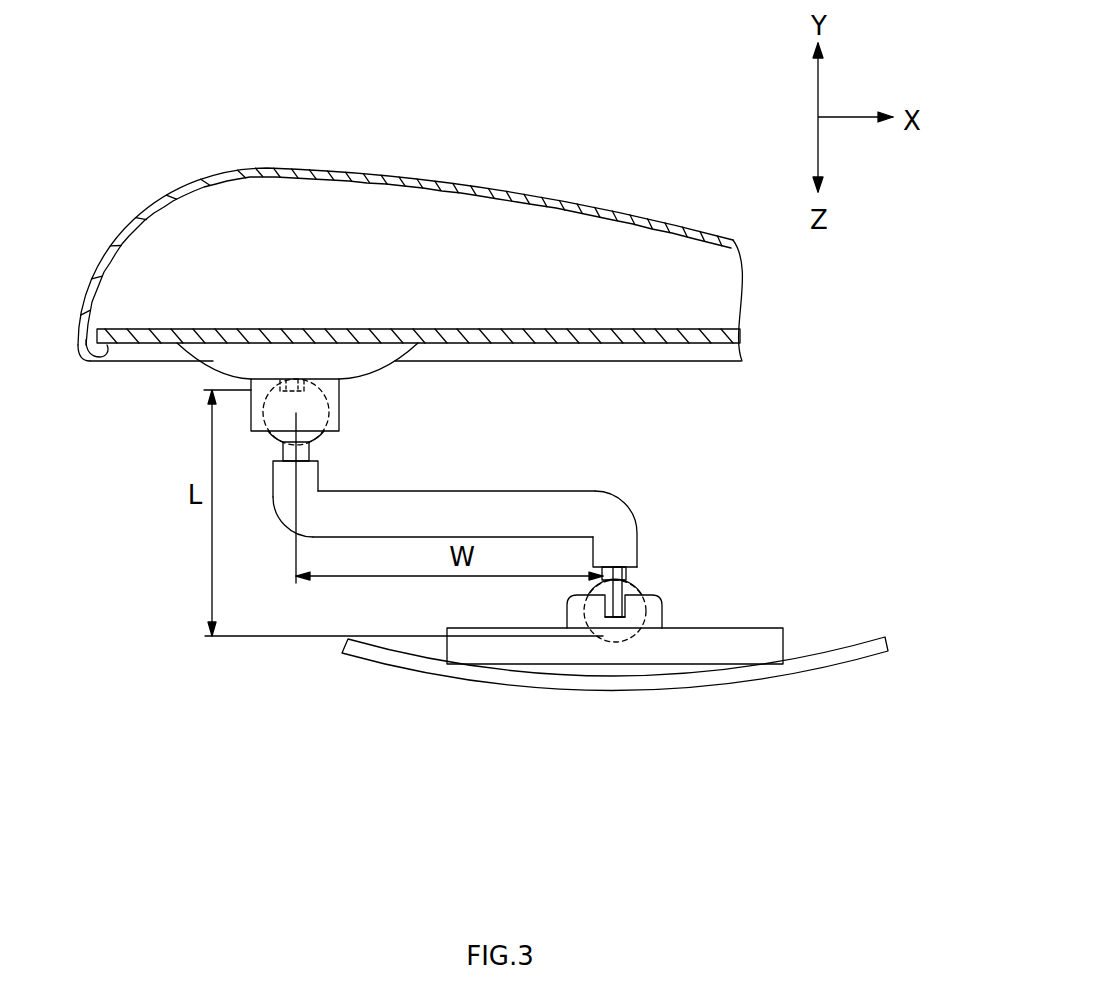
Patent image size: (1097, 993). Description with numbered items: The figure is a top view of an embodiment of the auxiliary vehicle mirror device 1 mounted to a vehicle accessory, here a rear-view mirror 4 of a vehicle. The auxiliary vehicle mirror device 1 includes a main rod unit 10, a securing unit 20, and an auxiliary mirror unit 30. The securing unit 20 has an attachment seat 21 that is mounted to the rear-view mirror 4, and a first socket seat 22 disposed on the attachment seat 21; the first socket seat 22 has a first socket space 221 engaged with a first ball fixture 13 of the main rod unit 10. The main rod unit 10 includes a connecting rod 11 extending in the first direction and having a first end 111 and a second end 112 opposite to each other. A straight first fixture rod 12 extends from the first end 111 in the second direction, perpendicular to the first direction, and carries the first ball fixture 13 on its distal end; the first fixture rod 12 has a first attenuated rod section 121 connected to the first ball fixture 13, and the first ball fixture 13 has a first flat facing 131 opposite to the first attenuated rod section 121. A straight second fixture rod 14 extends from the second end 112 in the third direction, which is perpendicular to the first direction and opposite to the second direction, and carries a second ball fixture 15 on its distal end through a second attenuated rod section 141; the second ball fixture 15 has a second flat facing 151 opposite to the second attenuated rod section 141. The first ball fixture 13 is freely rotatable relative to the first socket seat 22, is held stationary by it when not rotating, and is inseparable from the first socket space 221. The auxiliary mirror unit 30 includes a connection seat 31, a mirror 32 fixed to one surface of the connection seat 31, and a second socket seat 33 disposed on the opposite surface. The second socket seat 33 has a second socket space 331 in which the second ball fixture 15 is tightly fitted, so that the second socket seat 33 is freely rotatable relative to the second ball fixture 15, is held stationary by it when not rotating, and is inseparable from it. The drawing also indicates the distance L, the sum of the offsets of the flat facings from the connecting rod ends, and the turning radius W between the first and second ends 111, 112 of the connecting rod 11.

The auxiliary vehicle mirror device 1 is at (615, 686).
The rear-view mirror 4 is at (518, 327).
The main rod unit 10 is at (509, 565).
The connecting rod 11 is at (500, 510).
The first end 111 is at (320, 511).
The second end 112 is at (615, 512).
The first fixture rod 12 is at (308, 477).
The first attenuated rod section 121 is at (307, 452).
The first ball fixture 13 is at (352, 351).
The first flat facing 131 is at (305, 380).
The second fixture rod 14 is at (638, 535).
The second attenuated rod section 141 is at (626, 575).
The second ball fixture 15 is at (640, 661).
The second flat facing 151 is at (607, 645).
The securing unit 20 is at (200, 350).
The attachment seat 21 is at (220, 358).
The first socket seat 22 is at (339, 335).
The first socket space 221 is at (277, 380).
The auxiliary mirror unit 30 is at (615, 686).
The connection seat 31 is at (673, 647).
The mirror 32 is at (730, 680).
The second socket seat 33 is at (650, 684).
The second socket space 331 is at (627, 645).